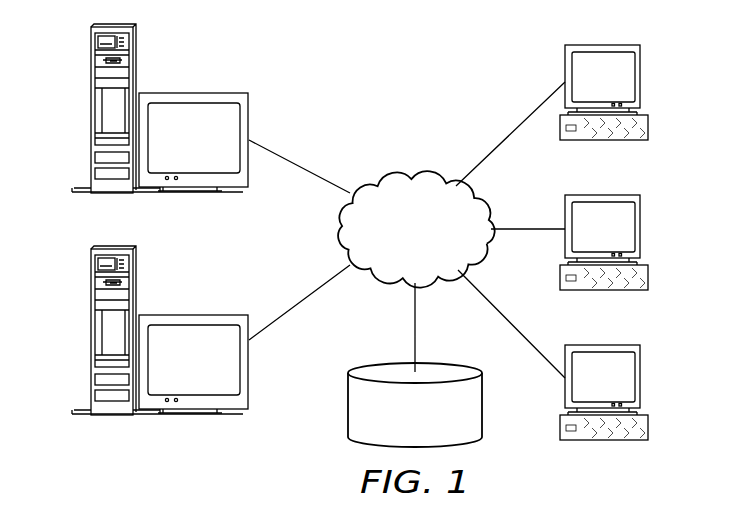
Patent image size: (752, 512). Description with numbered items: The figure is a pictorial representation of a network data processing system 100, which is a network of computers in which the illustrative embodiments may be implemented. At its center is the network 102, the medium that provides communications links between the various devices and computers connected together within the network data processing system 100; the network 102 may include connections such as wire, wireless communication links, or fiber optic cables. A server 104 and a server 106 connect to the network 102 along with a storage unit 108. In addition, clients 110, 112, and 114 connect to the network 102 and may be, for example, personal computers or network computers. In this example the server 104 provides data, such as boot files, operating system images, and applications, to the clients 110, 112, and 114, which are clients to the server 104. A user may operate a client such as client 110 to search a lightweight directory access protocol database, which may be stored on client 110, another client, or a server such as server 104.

The network data processing system 100 is at (466, 72).
The network 102 is at (384, 177).
The server 104 is at (91, 112).
The server 106 is at (91, 334).
The storage unit 108 is at (348, 417).
The client 110 is at (640, 77).
The client 112 is at (640, 227).
The client 114 is at (640, 378).